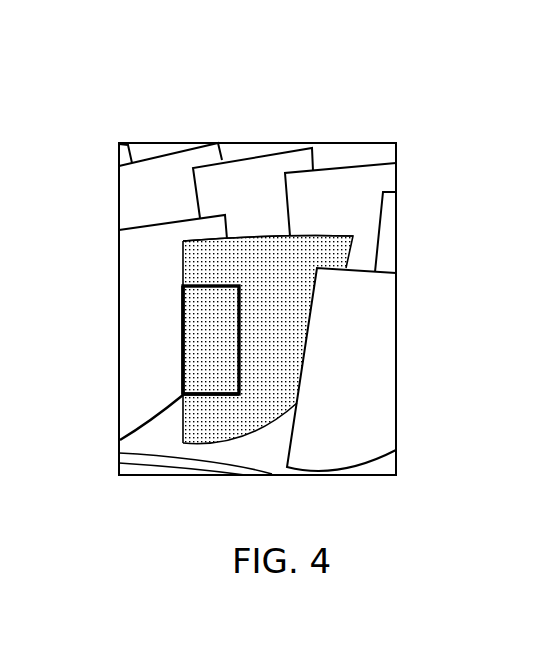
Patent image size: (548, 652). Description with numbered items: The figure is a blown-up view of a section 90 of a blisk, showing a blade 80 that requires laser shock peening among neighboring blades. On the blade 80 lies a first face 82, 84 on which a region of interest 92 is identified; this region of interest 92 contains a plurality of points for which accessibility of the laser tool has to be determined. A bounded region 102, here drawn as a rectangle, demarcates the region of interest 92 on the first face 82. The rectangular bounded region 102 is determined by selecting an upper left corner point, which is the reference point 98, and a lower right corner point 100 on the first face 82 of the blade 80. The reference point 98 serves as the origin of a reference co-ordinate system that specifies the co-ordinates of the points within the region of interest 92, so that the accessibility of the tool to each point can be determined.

The section 90 is at (423, 82).
The blade 80 is at (325, 247).
The first face 82 is at (210, 261).
The side boundary of treated region 84 is at (183, 263).
The reference point 98 is at (183, 287).
The bounded region 102 is at (183, 343).
The region of interest 92 is at (200, 377).
The lower right corner point 100 is at (239, 395).